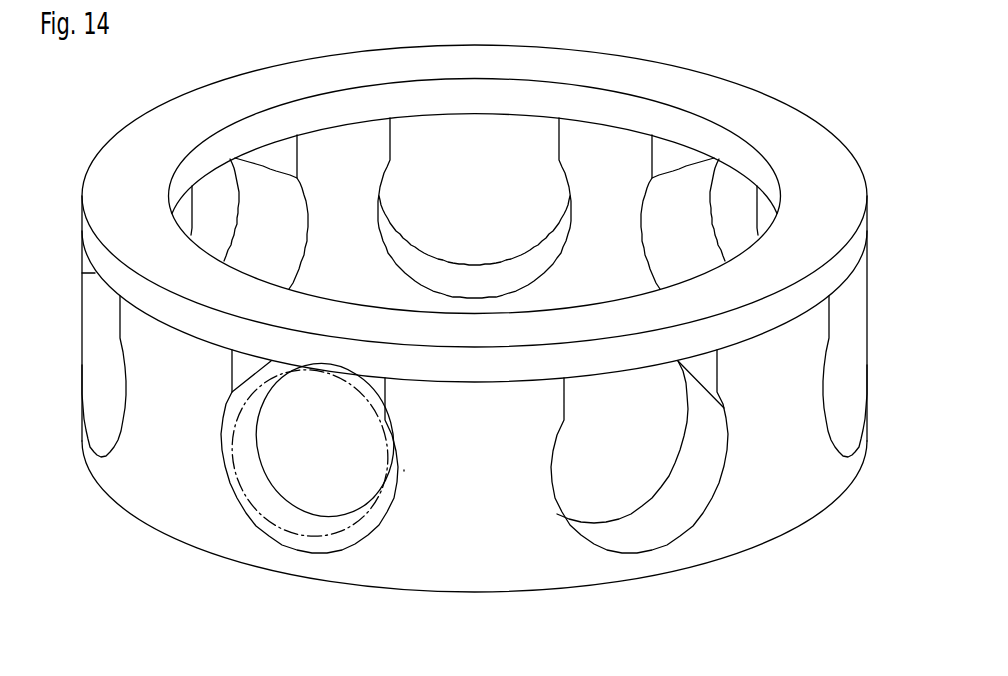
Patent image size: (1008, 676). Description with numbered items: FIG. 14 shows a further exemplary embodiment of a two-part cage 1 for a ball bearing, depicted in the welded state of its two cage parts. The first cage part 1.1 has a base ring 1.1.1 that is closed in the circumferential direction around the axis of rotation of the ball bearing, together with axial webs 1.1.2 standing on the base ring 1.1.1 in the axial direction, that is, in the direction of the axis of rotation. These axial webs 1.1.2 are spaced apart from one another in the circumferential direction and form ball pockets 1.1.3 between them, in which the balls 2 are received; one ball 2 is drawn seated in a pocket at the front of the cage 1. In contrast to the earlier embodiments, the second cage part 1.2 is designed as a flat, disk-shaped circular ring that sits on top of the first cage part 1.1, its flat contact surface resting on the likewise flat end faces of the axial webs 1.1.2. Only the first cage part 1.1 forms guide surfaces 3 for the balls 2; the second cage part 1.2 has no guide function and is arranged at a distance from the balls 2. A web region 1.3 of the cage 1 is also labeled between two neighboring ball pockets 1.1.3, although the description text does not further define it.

The cage 1 is at (460, 341).
The first cage part 1.1 is at (200, 512).
The base ring 1.1.1 is at (285, 560).
The axial webs 1.1.2 is at (773, 437).
The ball pockets 1.1.3 is at (673, 500).
The second cage part 1.2 is at (123, 160).
The web 1.3 is at (473, 385).
The balls 2 is at (386, 490).
The guide surfaces 3 is at (98, 402).